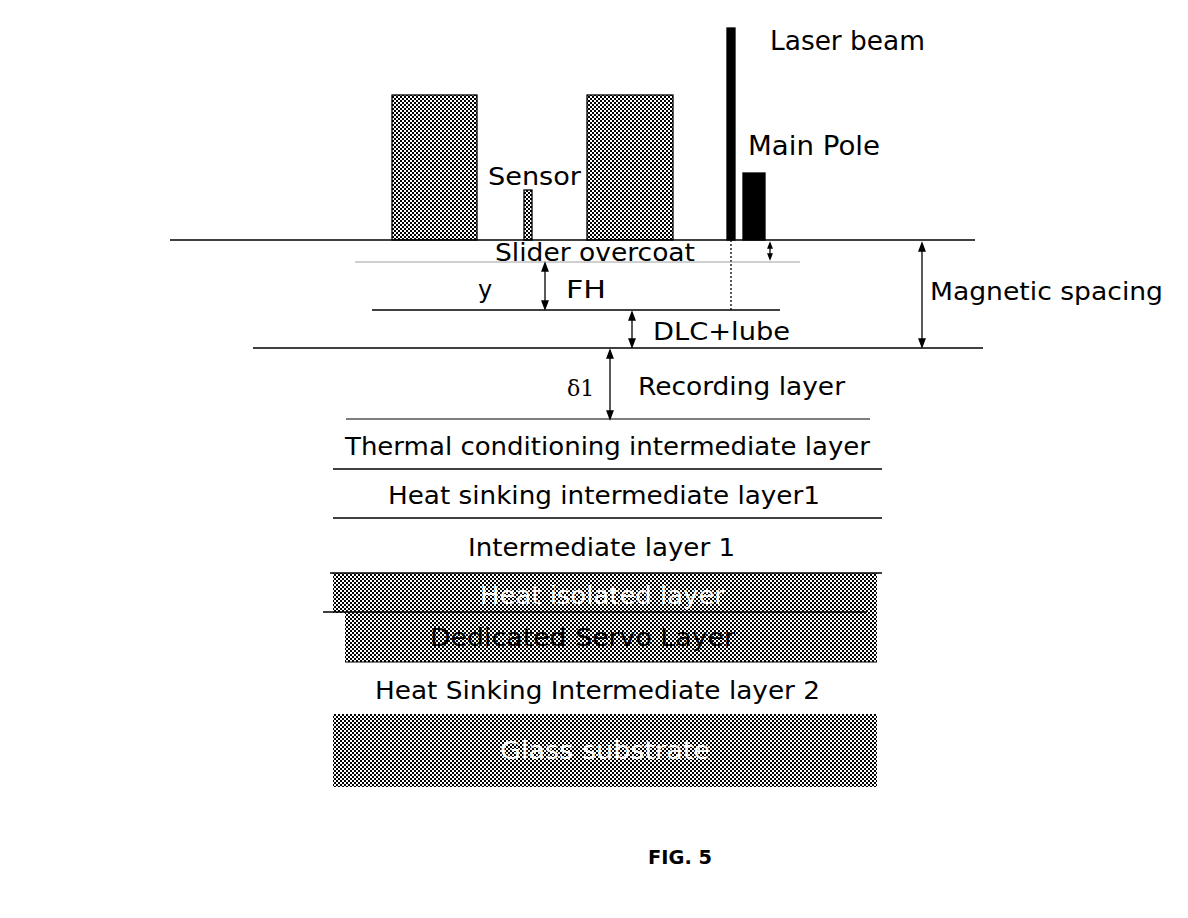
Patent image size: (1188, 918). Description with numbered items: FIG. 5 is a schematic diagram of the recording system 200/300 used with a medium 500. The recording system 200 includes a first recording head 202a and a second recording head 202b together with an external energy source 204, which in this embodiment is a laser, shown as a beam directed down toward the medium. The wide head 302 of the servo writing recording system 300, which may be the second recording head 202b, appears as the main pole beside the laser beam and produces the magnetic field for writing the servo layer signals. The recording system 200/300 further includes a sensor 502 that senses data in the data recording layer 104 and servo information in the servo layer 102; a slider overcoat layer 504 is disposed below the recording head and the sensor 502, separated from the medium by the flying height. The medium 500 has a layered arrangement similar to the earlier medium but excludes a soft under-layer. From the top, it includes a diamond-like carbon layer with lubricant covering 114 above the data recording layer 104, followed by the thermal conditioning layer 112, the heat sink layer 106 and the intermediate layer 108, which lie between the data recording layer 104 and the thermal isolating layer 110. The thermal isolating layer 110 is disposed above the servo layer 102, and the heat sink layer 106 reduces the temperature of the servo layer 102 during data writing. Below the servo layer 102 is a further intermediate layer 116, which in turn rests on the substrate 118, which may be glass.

The external energy source 204 is at (727, 48).
The first recording head 202a is at (871, 206).
The second recording head 202b is at (871, 206).
The wide head 302 is at (766, 198).
The recording system 200 is at (1045, 77).
The recording system 300 is at (983, 89).
The sensor 502 is at (522, 200).
The slider overcoat layer 504 is at (443, 256).
The medium 500 is at (248, 293).
The diamond-like carbon layer with lubricant covering 114 is at (834, 328).
The data recording layer 104 is at (862, 380).
The thermal conditioning layer 112 is at (883, 440).
The heat sink layer 106 is at (875, 498).
The intermediate layer 108 is at (875, 548).
The thermal isolating layer 110 is at (867, 593).
The servo layer 102 is at (870, 640).
The further intermediate layer 116 is at (857, 687).
The substrate 118 is at (857, 752).